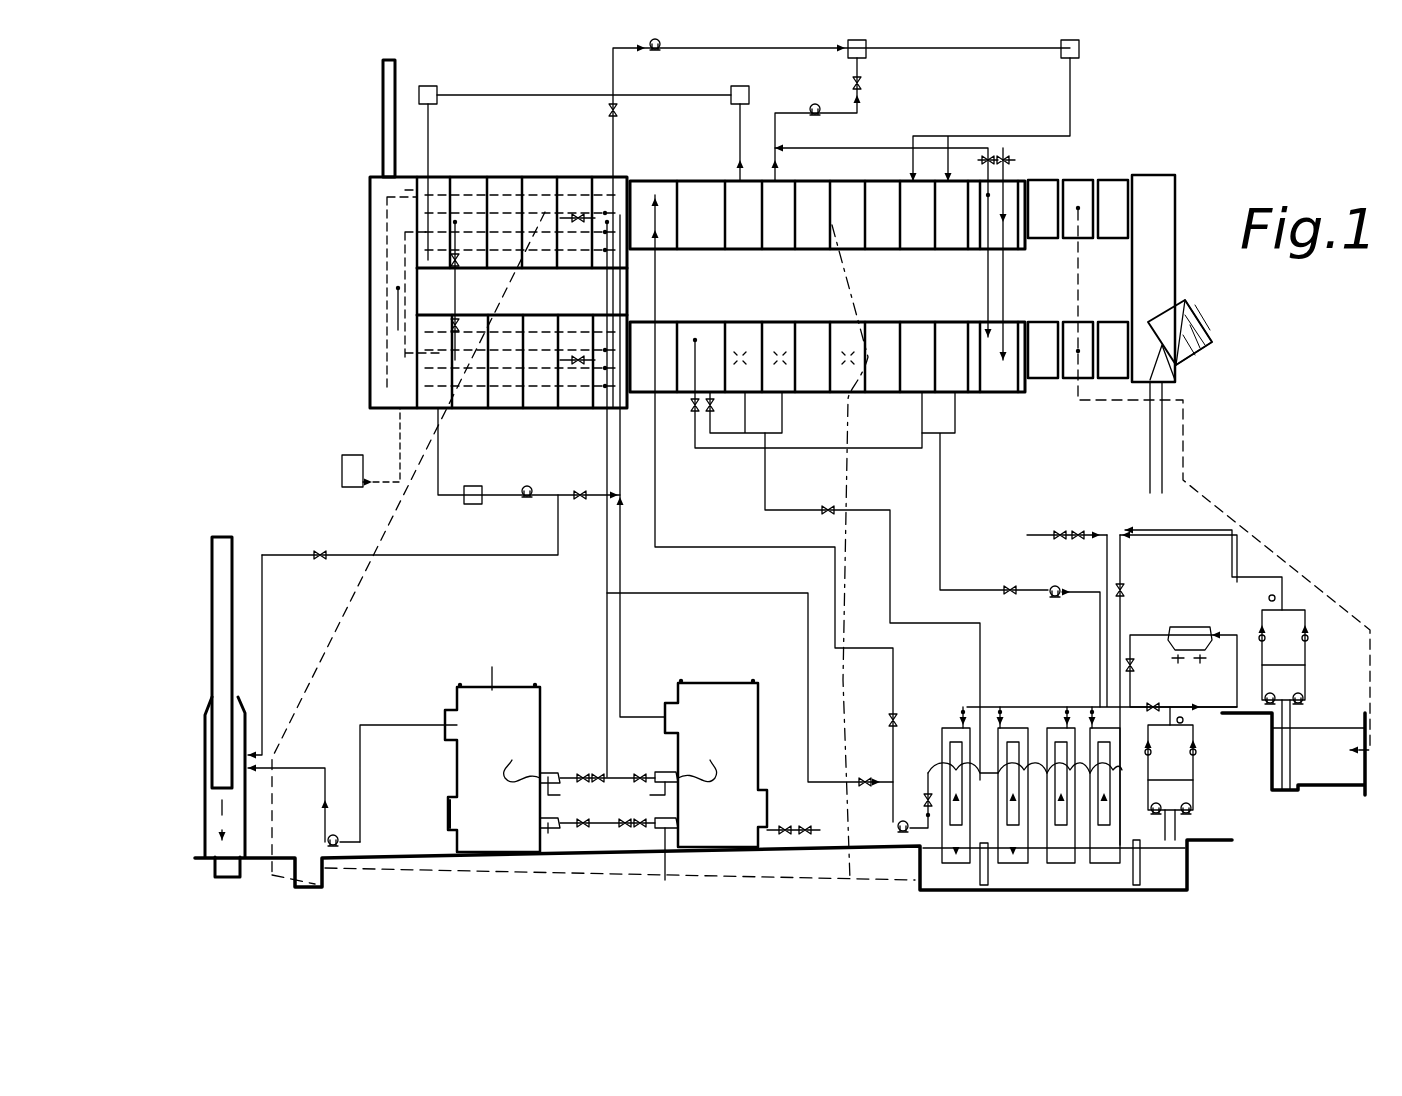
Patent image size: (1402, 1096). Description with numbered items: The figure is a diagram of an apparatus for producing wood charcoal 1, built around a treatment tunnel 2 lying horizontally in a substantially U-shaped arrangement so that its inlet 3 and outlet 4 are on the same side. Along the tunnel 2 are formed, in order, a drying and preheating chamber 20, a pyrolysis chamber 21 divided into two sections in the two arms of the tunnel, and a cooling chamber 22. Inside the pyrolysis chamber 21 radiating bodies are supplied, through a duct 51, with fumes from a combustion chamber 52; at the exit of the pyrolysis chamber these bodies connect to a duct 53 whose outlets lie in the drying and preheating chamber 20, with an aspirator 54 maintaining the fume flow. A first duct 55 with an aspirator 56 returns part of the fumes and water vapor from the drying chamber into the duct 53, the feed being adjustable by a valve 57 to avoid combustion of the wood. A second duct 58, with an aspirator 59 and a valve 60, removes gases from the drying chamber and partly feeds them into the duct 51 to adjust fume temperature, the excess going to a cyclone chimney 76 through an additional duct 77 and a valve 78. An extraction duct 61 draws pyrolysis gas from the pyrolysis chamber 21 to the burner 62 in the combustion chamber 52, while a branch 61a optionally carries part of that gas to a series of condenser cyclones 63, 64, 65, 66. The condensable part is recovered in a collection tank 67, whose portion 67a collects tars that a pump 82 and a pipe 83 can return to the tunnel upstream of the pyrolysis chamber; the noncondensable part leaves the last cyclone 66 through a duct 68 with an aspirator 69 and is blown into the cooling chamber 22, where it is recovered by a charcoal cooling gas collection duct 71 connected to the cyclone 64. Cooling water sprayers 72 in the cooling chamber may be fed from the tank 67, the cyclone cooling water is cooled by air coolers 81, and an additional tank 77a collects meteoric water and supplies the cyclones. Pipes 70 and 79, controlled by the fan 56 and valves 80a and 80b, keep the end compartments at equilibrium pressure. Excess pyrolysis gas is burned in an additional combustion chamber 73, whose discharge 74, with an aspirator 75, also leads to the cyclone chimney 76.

The apparatus for producing wood charcoal 1 is at (1145, 125).
The treatment tunnel 2 is at (358, 263).
The inlet 3 is at (1035, 182).
The outlet 4 is at (1032, 325).
The drying and preheating chamber 20 is at (878, 245).
The pyrolysis chamber 21 is at (498, 178).
The cooling chamber 22 is at (880, 395).
The duct 51 is at (614, 530).
The combustion chamber 52 is at (755, 742).
The duct 53 is at (942, 52).
The aspirator 54 is at (660, 58).
The first duct 55 is at (768, 132).
The aspirator 56 is at (825, 117).
The valve 57 is at (862, 80).
The second duct 58 is at (735, 130).
The aspirator 59 is at (532, 488).
The valve 60 is at (580, 505).
The extraction duct 61 is at (600, 590).
The branch 61a is at (668, 600).
The burner 62 is at (665, 770).
The condenser cyclone 63 is at (945, 780).
The condenser cyclone 64 is at (1003, 868).
The condenser cyclone 65 is at (1060, 868).
The condenser cyclone 66 is at (1112, 868).
The collection tank 67 is at (1140, 872).
The portion of the tank 67a is at (920, 866).
The duct 68 is at (943, 512).
The aspirator 69 is at (1048, 602).
The pipe 70 is at (983, 272).
The charcoal cooling gas collection duct 71 is at (765, 475).
The cooling water sprayers 72 is at (780, 350).
The additional combustion chamber 73 is at (493, 690).
The discharge 74 is at (348, 748).
The aspirator 75 is at (327, 838).
The cyclone chimney 76 is at (245, 712).
The additional duct 77 is at (438, 560).
The additional tank 77a is at (1322, 738).
The valve 78 is at (318, 548).
The pipe 79 is at (1003, 255).
The valve 80a is at (1010, 158).
The valve 80b is at (1005, 158).
The air coolers 81 is at (1185, 625).
The pump 82 is at (895, 828).
The pipe 83 is at (900, 682).